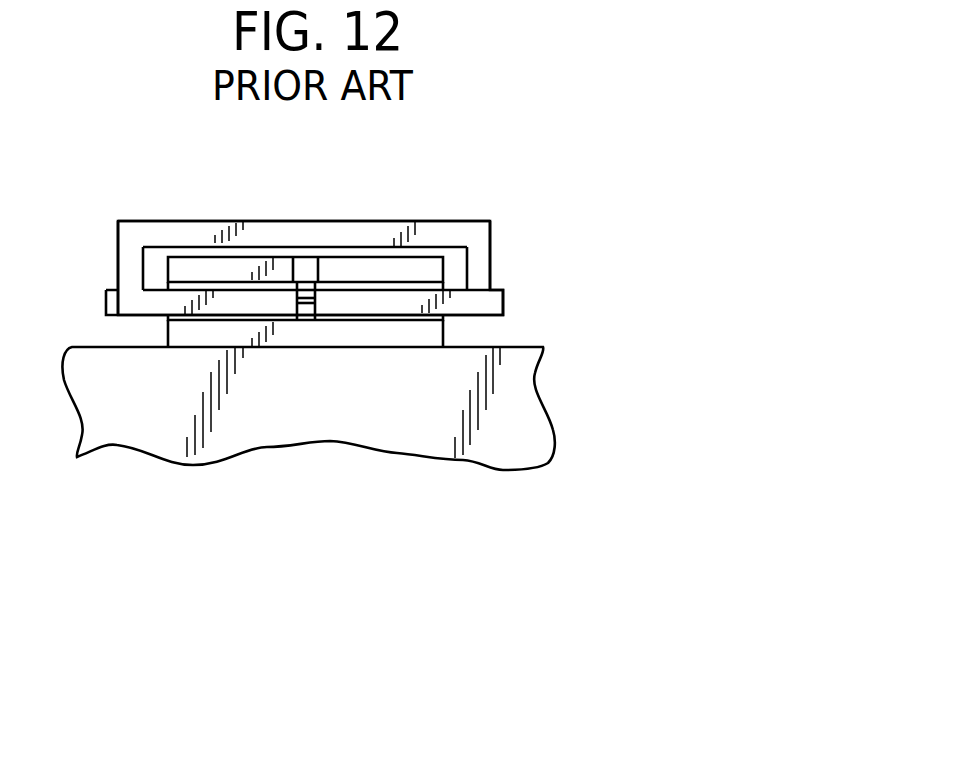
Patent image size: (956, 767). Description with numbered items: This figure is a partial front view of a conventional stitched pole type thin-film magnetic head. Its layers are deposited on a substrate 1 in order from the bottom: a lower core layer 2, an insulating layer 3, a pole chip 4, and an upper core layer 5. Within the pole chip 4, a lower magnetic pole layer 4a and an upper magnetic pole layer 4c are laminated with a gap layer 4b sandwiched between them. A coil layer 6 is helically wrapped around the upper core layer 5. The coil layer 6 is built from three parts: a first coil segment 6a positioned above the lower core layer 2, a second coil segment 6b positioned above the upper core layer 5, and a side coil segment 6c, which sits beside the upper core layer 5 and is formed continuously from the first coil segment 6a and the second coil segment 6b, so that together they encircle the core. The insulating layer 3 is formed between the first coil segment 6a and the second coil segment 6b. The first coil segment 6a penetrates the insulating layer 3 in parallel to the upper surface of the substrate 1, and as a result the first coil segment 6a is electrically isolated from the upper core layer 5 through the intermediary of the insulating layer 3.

The substrate 1 is at (512, 408).
The lower core layer 2 is at (437, 331).
The insulating layer 3 is at (440, 320).
The pole chip 4 is at (307, 340).
The lower magnetic pole layer 4a is at (320, 305).
The gap layer 4b is at (320, 297).
The upper magnetic pole layer 4c is at (320, 279).
The upper core layer 5 is at (435, 270).
The coil layer 6 is at (170, 210).
The first coil segment 6a is at (418, 305).
The second coil segment 6b is at (445, 235).
The side coil segment 6c is at (130, 270).